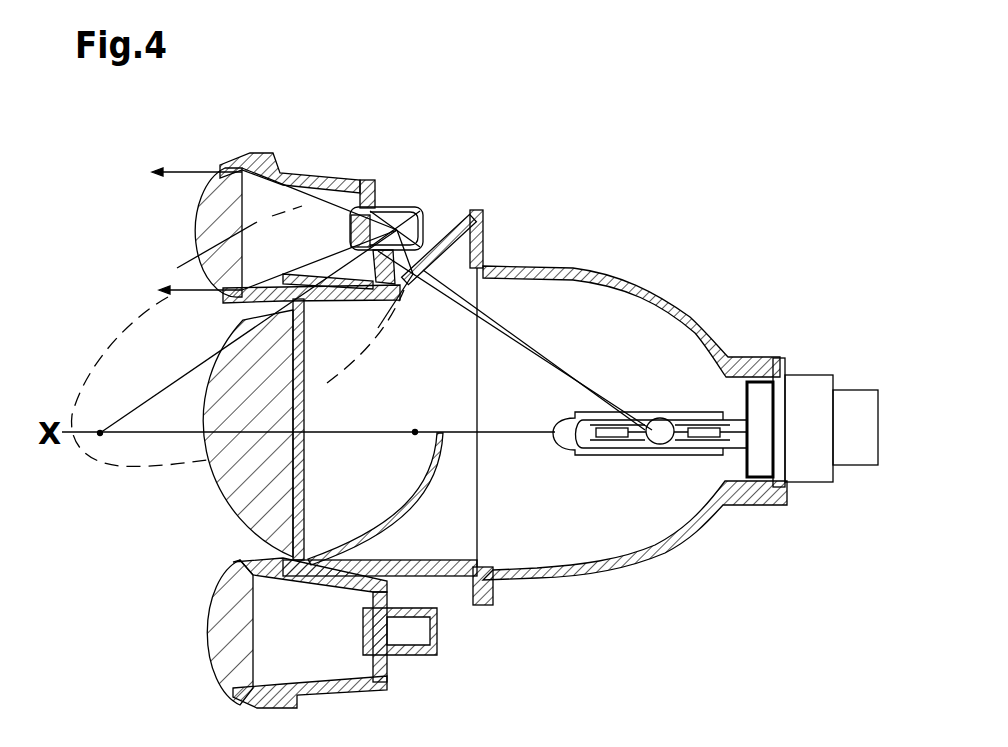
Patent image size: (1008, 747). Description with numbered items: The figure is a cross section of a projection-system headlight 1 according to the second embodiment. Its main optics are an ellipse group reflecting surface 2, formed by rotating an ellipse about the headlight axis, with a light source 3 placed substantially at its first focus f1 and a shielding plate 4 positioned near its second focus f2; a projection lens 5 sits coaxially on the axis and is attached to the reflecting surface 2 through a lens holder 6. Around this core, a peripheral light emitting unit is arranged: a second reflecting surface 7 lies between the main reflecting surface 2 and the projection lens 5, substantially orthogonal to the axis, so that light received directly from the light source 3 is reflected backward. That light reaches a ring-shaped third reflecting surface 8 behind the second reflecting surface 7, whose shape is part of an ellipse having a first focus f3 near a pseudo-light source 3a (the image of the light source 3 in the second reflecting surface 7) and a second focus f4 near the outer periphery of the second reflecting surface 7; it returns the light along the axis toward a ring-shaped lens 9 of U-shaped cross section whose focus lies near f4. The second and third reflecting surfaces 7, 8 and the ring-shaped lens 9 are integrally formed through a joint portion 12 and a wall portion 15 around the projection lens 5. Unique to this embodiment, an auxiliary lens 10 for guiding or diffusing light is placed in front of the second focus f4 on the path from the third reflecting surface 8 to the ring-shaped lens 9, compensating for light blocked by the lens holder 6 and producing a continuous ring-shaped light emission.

The headlight 1 is at (795, 190).
The ellipse group reflecting surface 2 is at (640, 566).
The light source 3 is at (657, 430).
The pseudo-light source 3a is at (100, 437).
The shielding plate 4 is at (440, 480).
The projection lens 5 is at (232, 510).
The lens holder 6 is at (440, 578).
The second reflecting surface 7 is at (420, 270).
The third reflecting surface 8 is at (420, 208).
The ring-shaped lens 9 is at (210, 198).
The auxiliary lens 10 is at (344, 176).
The joint portion 12 is at (387, 207).
The wall portion 15 is at (293, 177).
The first focus f1 is at (725, 507).
The second focus f2 is at (416, 430).
The first focus f3 is at (111, 492).
The second focus f4 is at (396, 228).